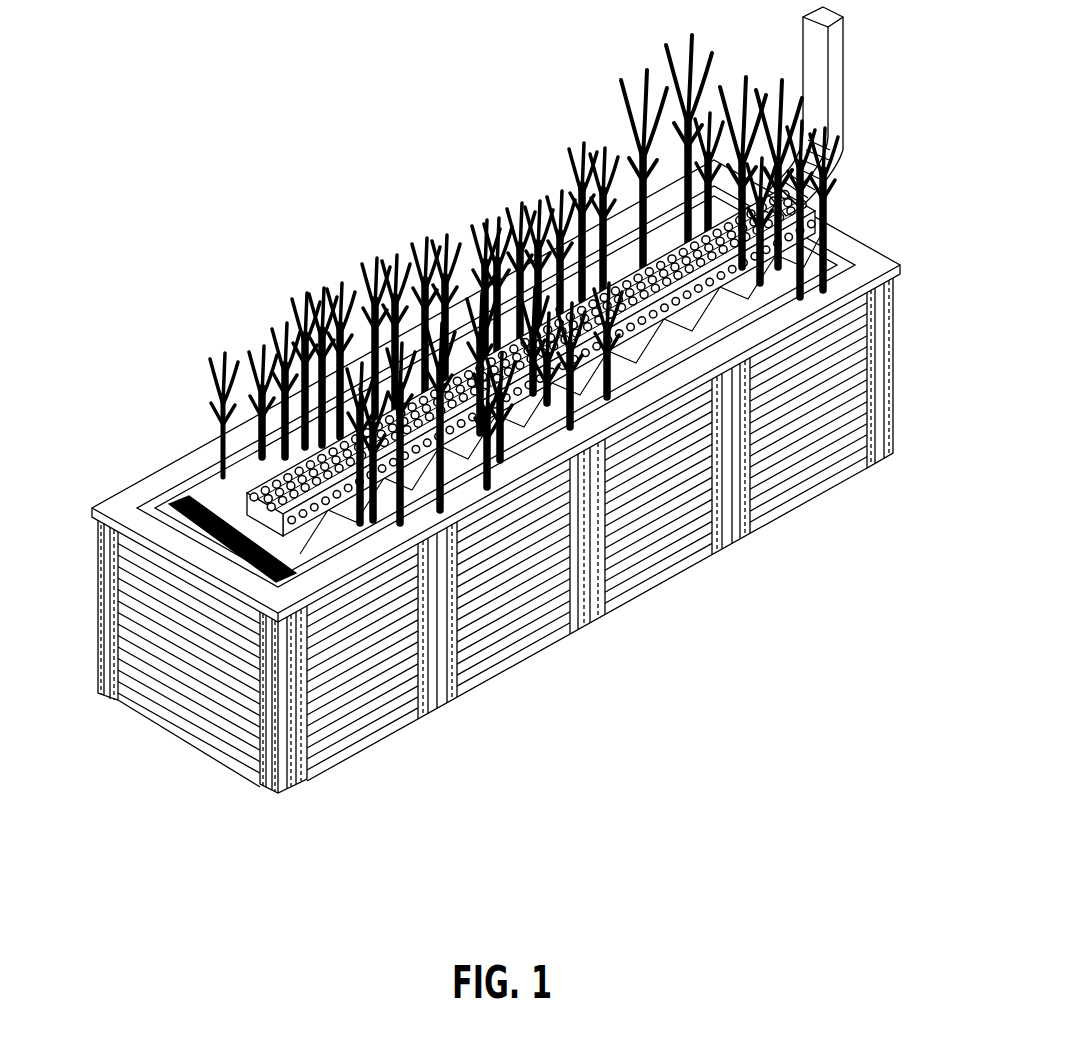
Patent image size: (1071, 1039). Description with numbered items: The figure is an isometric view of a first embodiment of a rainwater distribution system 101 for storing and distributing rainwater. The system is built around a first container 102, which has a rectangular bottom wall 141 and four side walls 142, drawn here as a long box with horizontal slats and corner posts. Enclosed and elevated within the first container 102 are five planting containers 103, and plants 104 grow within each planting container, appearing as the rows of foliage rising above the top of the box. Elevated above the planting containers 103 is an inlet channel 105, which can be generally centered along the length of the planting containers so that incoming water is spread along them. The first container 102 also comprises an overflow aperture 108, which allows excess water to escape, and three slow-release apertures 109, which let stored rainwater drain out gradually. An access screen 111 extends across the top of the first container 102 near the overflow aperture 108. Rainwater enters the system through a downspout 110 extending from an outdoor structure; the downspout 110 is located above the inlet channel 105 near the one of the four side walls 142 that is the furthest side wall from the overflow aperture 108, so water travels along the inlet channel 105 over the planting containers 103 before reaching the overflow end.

The rainwater distribution system 101 is at (352, 206).
The first container 102 is at (780, 480).
The planting containers 103 is at (248, 491).
The plants 104 is at (687, 173).
The inlet channel 105 is at (195, 503).
The overflow aperture 108 is at (190, 632).
The slow-release apertures 109 is at (190, 734).
The downspout 110 is at (845, 150).
The access screen 111 is at (293, 587).
The rectangular bottom wall 141 is at (625, 602).
The side walls 142 is at (887, 377).